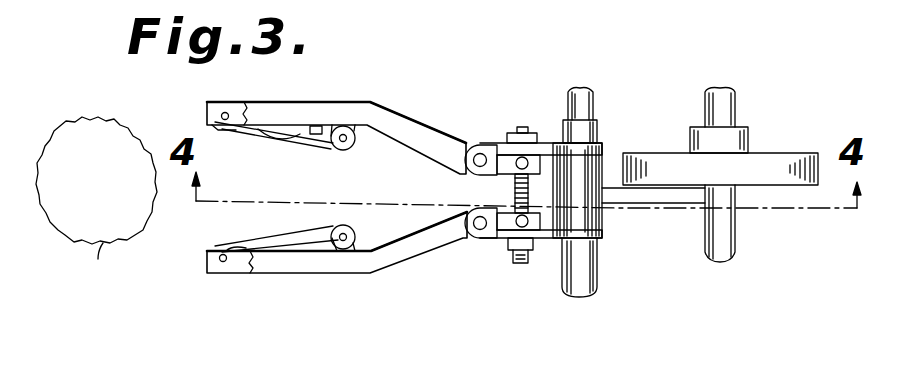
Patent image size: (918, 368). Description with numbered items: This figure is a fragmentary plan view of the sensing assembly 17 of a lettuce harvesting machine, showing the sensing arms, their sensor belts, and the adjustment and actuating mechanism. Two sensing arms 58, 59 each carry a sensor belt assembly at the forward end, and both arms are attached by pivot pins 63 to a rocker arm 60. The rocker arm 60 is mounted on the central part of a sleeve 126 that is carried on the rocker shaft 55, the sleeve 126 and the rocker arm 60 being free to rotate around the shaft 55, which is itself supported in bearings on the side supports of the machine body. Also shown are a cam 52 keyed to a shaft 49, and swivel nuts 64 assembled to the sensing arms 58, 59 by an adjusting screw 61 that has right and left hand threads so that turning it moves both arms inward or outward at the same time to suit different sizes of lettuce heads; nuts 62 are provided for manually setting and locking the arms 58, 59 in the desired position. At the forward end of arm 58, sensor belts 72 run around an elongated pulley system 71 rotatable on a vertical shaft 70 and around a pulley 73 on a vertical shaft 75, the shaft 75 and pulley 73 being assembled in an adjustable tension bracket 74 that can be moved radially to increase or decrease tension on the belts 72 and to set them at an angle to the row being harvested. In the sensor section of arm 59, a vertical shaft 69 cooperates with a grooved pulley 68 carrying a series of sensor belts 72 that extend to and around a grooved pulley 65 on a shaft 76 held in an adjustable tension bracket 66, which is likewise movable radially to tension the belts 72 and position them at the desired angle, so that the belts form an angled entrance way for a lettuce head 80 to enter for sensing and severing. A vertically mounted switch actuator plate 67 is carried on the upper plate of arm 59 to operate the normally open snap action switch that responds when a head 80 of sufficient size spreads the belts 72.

The assembly 17 is at (407, 108).
The shaft 49 is at (708, 263).
The cam 52 is at (774, 153).
The shaft 55 is at (558, 276).
The sensing arm 58 is at (206, 262).
The sensing arm 59 is at (205, 112).
The rocker arm 60 is at (663, 203).
The adjusting screw 61 is at (513, 263).
The nuts 62 is at (507, 250).
The pivot pins 63 is at (473, 210).
The swivel nuts 64 is at (518, 216).
The grooved pulley 65 is at (341, 148).
The adjustable tension bracket 66 is at (344, 129).
The switch actuator plate 67 is at (293, 136).
The grooved pulley 68 is at (235, 130).
The vertical shaft 69 is at (228, 112).
The vertical shaft 70 is at (226, 263).
The elongated pulley system 71 is at (231, 248).
The sensor belts 72 is at (274, 143).
The pulley 73 is at (323, 245).
The adjustable tension bracket 74 is at (343, 253).
The vertical shaft 75 is at (355, 234).
The shaft 76 is at (356, 140).
The lettuce head 80 is at (96, 211).
The sleeve 126 is at (602, 132).